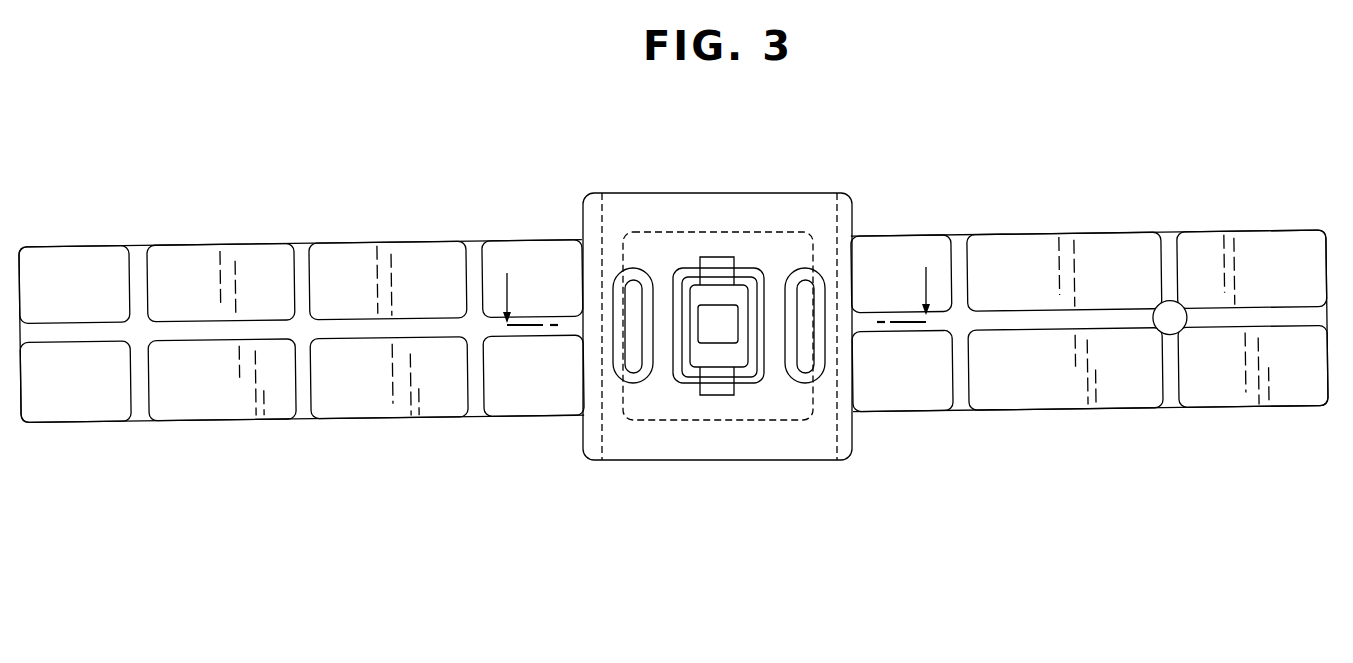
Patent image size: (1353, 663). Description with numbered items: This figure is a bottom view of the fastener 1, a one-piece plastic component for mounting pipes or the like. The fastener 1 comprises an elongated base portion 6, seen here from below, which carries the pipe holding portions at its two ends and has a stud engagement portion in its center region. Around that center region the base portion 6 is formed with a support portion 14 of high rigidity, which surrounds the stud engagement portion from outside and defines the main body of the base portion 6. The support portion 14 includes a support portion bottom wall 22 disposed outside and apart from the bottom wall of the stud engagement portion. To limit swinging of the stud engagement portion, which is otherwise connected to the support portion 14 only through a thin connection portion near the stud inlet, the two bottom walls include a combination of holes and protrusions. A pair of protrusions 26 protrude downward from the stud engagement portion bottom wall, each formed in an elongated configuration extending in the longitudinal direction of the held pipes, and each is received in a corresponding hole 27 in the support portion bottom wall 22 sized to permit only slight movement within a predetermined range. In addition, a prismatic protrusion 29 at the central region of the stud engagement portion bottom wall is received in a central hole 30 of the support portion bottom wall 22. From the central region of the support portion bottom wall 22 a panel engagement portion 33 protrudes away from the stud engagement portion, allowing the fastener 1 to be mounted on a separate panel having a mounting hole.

The fastener 1 is at (962, 156).
The base portion 6 is at (377, 392).
The support portion 14 is at (577, 450).
The support portion bottom wall 22 is at (818, 218).
The protrusion 26 is at (632, 293).
The hole 27 is at (618, 357).
The prismatic protrusion 29 is at (722, 327).
The hole 30 is at (723, 352).
The panel engagement portion 33 is at (681, 262).